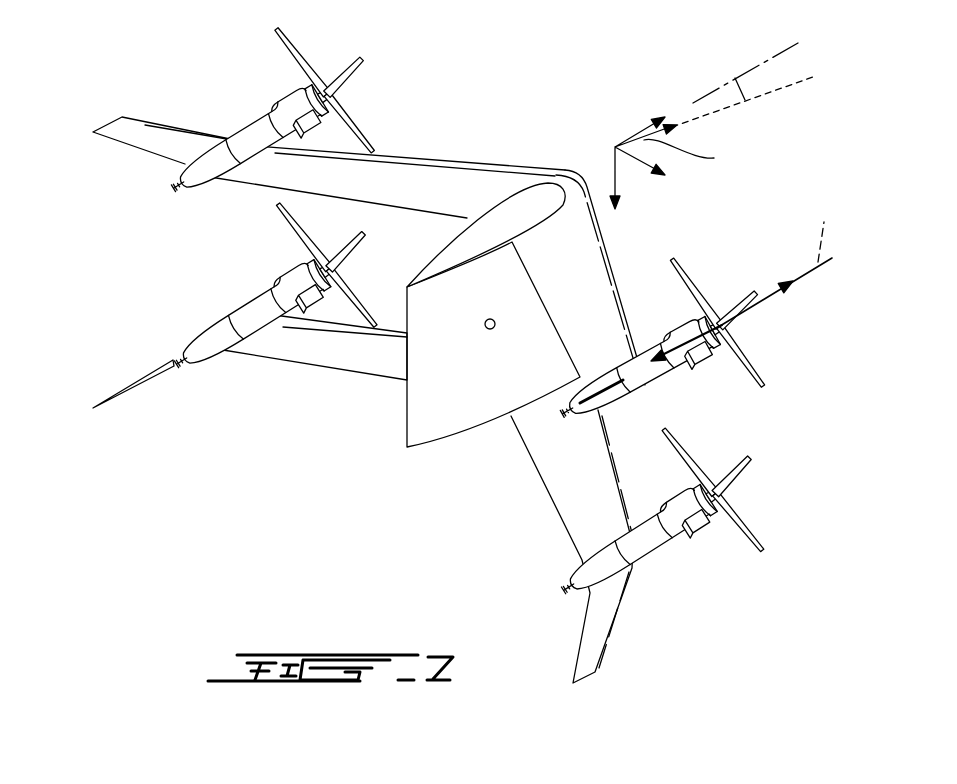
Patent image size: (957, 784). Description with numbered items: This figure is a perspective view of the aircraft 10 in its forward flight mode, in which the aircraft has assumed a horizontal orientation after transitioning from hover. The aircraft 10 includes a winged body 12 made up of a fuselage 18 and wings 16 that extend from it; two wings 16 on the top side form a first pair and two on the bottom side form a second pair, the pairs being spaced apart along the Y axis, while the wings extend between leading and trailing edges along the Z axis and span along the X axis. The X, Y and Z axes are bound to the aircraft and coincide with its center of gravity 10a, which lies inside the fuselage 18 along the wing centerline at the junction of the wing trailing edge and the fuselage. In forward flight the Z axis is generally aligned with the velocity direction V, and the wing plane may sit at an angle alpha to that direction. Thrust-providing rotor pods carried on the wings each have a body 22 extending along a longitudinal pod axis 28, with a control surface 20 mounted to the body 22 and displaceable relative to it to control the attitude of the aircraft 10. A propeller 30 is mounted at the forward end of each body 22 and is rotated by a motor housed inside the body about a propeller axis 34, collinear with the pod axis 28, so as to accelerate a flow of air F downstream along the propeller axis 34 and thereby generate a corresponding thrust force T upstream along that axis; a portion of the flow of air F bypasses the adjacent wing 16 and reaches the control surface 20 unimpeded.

The aircraft 10 is at (680, 45).
The center of gravity 10a is at (483, 325).
The winged body 12 is at (322, 465).
The wing 16 is at (470, 178).
The fuselage 18 is at (433, 418).
The control surface 20 is at (620, 396).
The body 22 is at (648, 360).
The longitudinal pod axis 28 is at (538, 428).
The propeller 30 is at (757, 363).
The propeller axis 34 is at (776, 261).
The flow of air F is at (680, 363).
The thrust force T is at (760, 300).